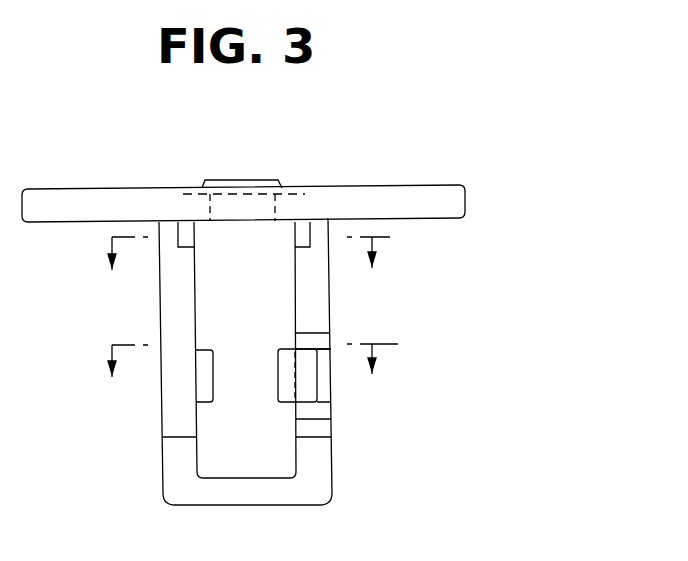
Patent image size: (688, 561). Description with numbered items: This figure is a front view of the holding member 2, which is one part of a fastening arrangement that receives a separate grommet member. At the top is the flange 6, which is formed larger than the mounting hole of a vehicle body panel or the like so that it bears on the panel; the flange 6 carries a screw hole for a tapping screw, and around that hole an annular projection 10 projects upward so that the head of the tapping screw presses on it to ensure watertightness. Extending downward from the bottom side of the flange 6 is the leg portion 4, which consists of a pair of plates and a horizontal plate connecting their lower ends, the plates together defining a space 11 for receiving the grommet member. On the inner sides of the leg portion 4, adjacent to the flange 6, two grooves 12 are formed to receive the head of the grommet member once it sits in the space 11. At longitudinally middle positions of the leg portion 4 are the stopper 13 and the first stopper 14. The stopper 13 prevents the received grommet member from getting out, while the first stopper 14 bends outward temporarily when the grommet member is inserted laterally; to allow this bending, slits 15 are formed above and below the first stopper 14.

The holding member 2 is at (435, 162).
The leg portion 4 is at (177, 304).
The flange 6 is at (458, 201).
The annular projection 10 is at (257, 180).
The space 11 is at (258, 288).
The grooves 12 is at (183, 232).
The stopper 13 is at (200, 383).
The first stopper 14 is at (283, 388).
The slits 15 is at (313, 340).